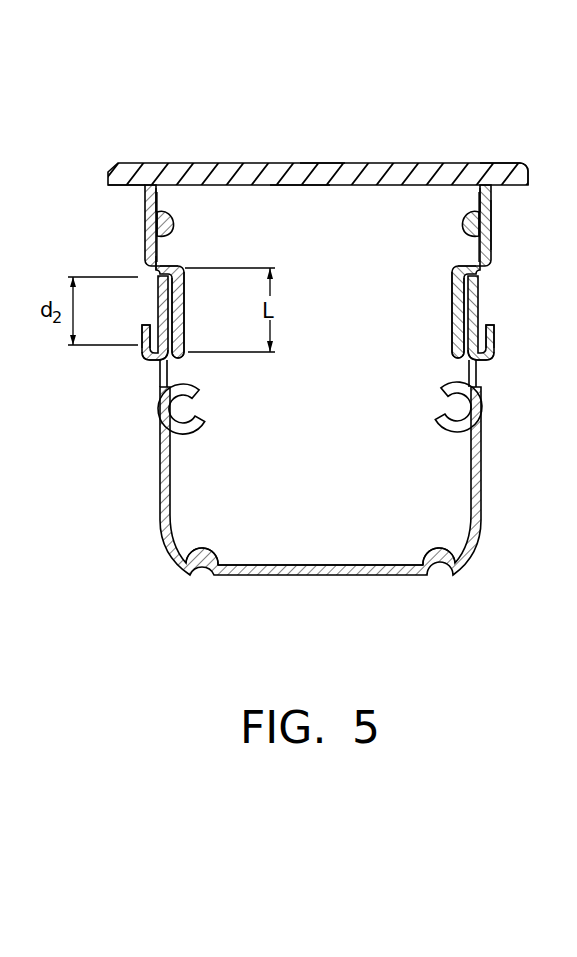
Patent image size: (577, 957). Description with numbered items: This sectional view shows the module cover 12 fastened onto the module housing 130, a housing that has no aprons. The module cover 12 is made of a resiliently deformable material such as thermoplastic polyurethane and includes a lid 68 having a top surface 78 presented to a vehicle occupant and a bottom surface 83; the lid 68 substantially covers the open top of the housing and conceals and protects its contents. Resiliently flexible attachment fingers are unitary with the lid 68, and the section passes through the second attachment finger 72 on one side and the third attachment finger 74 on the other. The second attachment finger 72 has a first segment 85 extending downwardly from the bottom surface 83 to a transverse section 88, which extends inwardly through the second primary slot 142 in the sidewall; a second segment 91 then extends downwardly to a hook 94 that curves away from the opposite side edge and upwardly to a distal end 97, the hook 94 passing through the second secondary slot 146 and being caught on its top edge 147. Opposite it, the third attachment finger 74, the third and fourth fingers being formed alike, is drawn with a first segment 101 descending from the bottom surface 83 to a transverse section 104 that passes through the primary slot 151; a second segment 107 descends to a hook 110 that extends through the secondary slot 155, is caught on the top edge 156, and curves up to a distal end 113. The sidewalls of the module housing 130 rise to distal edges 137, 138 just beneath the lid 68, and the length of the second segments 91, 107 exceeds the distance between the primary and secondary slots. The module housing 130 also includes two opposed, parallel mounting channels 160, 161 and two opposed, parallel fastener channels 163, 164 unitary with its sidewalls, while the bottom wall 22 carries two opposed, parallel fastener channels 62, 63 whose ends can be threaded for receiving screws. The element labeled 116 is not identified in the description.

The module cover 12 is at (279, 126).
The lid 68 is at (324, 156).
The top surface 78 is at (397, 163).
The bottom surface 83 is at (298, 186).
The underside of rim 116 is at (136, 188).
The second attachment finger 72 is at (133, 217).
The third attachment finger 74 is at (505, 213).
The first segment 85 is at (150, 246).
The distal edge 137 is at (163, 213).
The distal edge 138 is at (476, 213).
The fastener channel 163 is at (176, 226).
The fastener channel 164 is at (460, 226).
The second primary slot 142 is at (181, 254).
The transverse section 88 is at (161, 258).
The second segment 91 is at (184, 274).
The top edge 147 is at (212, 333).
The distal end 97 is at (143, 324).
The hook 94 is at (152, 355).
The second secondary slot 146 is at (158, 373).
The mounting channel 160 is at (200, 414).
The mounting channel 161 is at (437, 412).
The module housing 130 is at (291, 600).
The fastener channel 62 is at (207, 566).
The fastener channel 63 is at (446, 556).
The bottom wall 22 is at (331, 576).
The first segment 101 is at (492, 235).
The transverse section 104 is at (490, 264).
The second segment 107 is at (458, 292).
The distal end 113 is at (491, 323).
The hook 110 is at (487, 348).
The top edge 156 is at (469, 353).
The secondary slot 155 is at (483, 376).
The primary slot 151 is at (469, 247).